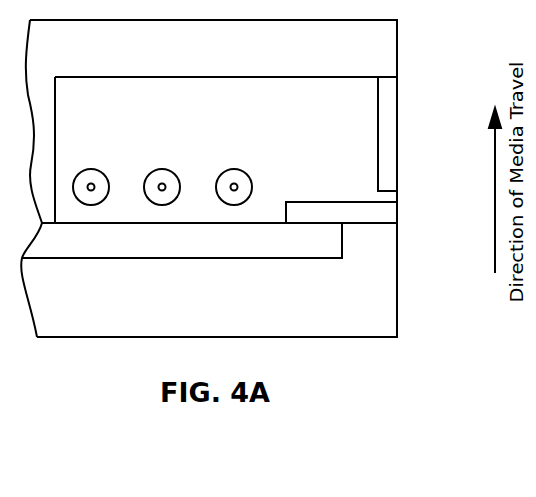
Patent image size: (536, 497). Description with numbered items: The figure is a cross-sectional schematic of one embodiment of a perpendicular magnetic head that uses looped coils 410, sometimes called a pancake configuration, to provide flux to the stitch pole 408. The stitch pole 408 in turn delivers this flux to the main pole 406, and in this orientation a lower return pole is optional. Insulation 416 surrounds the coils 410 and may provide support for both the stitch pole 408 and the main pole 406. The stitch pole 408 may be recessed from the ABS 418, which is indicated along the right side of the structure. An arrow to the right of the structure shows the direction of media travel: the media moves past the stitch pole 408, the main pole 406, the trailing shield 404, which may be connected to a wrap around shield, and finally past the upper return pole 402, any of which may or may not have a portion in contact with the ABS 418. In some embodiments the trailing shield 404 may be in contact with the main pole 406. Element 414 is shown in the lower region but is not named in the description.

The upper return pole 402 is at (300, 58).
The trailing shield 404 is at (398, 115).
The main pole 406 is at (398, 207).
The stitch pole 408 is at (244, 251).
The looped coils 410 is at (88, 169).
The base 414 is at (244, 308).
The insulation 416 is at (342, 161).
The ABS 418 is at (405, 38).